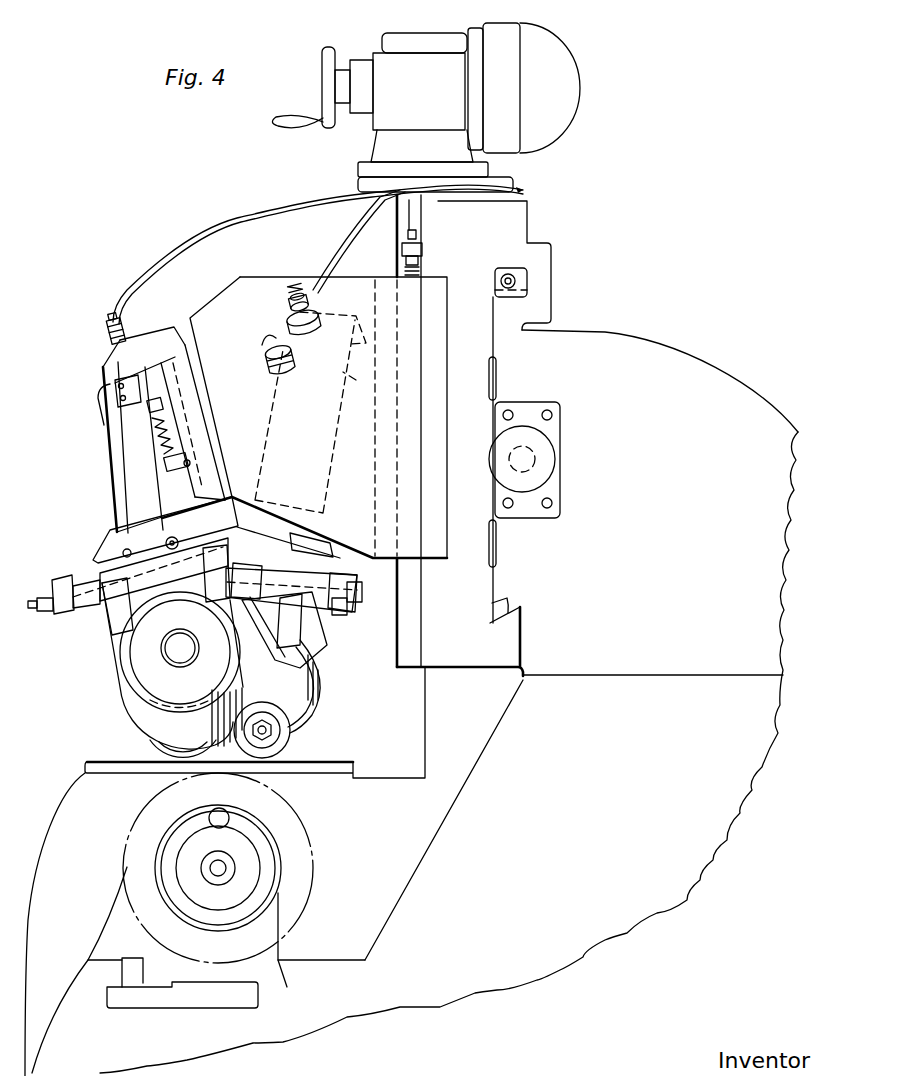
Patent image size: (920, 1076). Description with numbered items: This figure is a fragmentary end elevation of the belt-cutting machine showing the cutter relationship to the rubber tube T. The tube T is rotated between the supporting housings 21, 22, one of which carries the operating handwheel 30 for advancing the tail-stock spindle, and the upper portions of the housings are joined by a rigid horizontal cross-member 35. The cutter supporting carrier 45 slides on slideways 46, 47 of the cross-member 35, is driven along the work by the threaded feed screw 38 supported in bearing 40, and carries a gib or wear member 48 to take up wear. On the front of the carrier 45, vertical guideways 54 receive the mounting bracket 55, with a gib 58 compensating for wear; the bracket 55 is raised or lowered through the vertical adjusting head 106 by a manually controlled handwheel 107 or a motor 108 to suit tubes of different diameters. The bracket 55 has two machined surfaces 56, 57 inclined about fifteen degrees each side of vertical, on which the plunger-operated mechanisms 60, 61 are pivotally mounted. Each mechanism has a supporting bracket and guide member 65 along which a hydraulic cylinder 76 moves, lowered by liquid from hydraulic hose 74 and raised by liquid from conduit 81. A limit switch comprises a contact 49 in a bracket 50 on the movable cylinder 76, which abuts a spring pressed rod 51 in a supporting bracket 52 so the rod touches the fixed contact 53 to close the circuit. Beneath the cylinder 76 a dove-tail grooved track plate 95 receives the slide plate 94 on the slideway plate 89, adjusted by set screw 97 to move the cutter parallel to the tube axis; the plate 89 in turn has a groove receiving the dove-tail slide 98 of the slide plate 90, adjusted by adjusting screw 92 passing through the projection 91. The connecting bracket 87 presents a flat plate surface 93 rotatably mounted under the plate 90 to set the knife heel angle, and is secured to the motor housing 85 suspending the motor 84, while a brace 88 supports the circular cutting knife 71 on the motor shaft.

The vertical adjusting head 106 is at (421, 58).
The manually controlled handwheel 107 is at (325, 91).
The motor 108 is at (562, 64).
The cutter supporting carrier 45 is at (537, 216).
The gib or wear member 48 is at (520, 279).
The slideway 46 is at (493, 313).
The rigid horizontal cross-member 35 is at (627, 348).
The gib or wear member 58 is at (420, 252).
The vertical guideways 54 is at (405, 221).
The mounting bracket 55 is at (288, 279).
The hydraulic hose 74 is at (177, 257).
The hydraulic conduit 81 is at (203, 261).
The supporting bracket and guide member 65 is at (159, 339).
The plunger-operated mechanism 60 is at (266, 346).
The machined surface 56 is at (205, 393).
The bracket 50 is at (115, 389).
The plunger-operated mechanism 61 is at (93, 396).
The contact 49 is at (149, 407).
The spring pressed rod 51 is at (155, 418).
The supporting bracket 52 is at (175, 440).
The machined surface 57 is at (343, 428).
The fixed contact 53 is at (190, 456).
The hydraulic cylinder 76 is at (118, 466).
The dove-tail grooved track plate 95 is at (118, 538).
The dove-tail slide plate 94 is at (118, 548).
The slideway plate 89 is at (72, 578).
The downwardly extending projection 91 is at (53, 580).
The adjusting screw 92 is at (47, 612).
The connecting bracket 87 is at (96, 612).
The adjustable set screw 97 is at (177, 550).
The dove-tail slide 98 is at (358, 592).
The slide plate 90 is at (345, 608).
The flat plate surface 93 is at (330, 630).
The brace 88 is at (287, 675).
The motor 84 is at (134, 665).
The motor housing 85 is at (132, 710).
The circular cutting knife 71 is at (163, 749).
The slideway 47 is at (508, 598).
The threaded feed screw 38 is at (537, 455).
The bearing 40 is at (557, 475).
The supporting housing 21 is at (67, 832).
The operating handwheel 30 is at (258, 838).
The rubber tube T is at (314, 873).
The supporting housing 22 is at (72, 997).